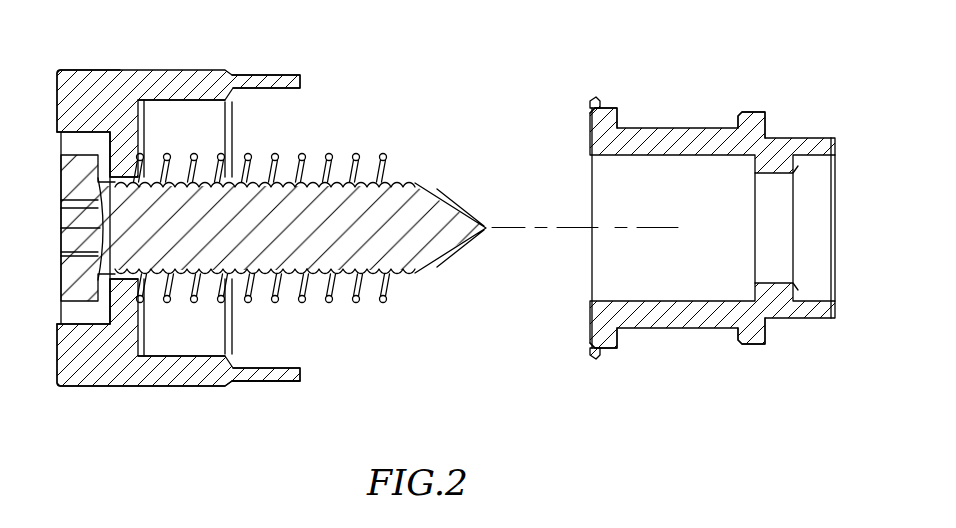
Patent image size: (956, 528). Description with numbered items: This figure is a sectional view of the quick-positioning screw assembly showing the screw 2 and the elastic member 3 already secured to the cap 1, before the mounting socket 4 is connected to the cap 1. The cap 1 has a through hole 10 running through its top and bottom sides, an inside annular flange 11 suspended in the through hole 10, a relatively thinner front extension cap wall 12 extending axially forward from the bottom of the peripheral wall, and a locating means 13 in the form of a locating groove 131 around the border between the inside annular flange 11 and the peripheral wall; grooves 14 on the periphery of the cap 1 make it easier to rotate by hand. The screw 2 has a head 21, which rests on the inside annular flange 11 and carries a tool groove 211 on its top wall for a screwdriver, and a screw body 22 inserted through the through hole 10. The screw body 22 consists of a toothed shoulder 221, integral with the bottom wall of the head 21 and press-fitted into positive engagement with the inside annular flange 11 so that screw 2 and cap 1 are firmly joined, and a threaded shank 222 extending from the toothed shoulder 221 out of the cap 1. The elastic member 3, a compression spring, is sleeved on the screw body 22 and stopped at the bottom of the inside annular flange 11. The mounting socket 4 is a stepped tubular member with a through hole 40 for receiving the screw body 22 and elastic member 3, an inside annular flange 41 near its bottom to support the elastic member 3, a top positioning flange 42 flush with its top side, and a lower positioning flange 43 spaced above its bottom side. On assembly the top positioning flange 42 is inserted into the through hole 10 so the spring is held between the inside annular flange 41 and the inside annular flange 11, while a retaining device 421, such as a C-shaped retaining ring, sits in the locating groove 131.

The cap 1 is at (227, 56).
The through hole 10 is at (163, 345).
The inside annular flange 11 is at (113, 166).
The front extension cap wall 12 is at (277, 74).
The locating means 13 is at (158, 95).
The locating groove 131 is at (143, 97).
The grooves 14 is at (72, 69).
The screw 2 is at (440, 191).
The head 21 is at (67, 310).
The tool groove 211 is at (67, 236).
The screw body 22 is at (418, 274).
The toothed shoulder 221 is at (205, 273).
The threaded shank 222 is at (384, 273).
The elastic member 3 is at (385, 155).
The mounting socket 4 is at (851, 322).
The through hole 40 is at (818, 198).
The inside annular flange 41 is at (796, 166).
The top positioning flange 42 is at (624, 99).
The retaining device 421 is at (594, 97).
The lower positioning flange 43 is at (760, 112).